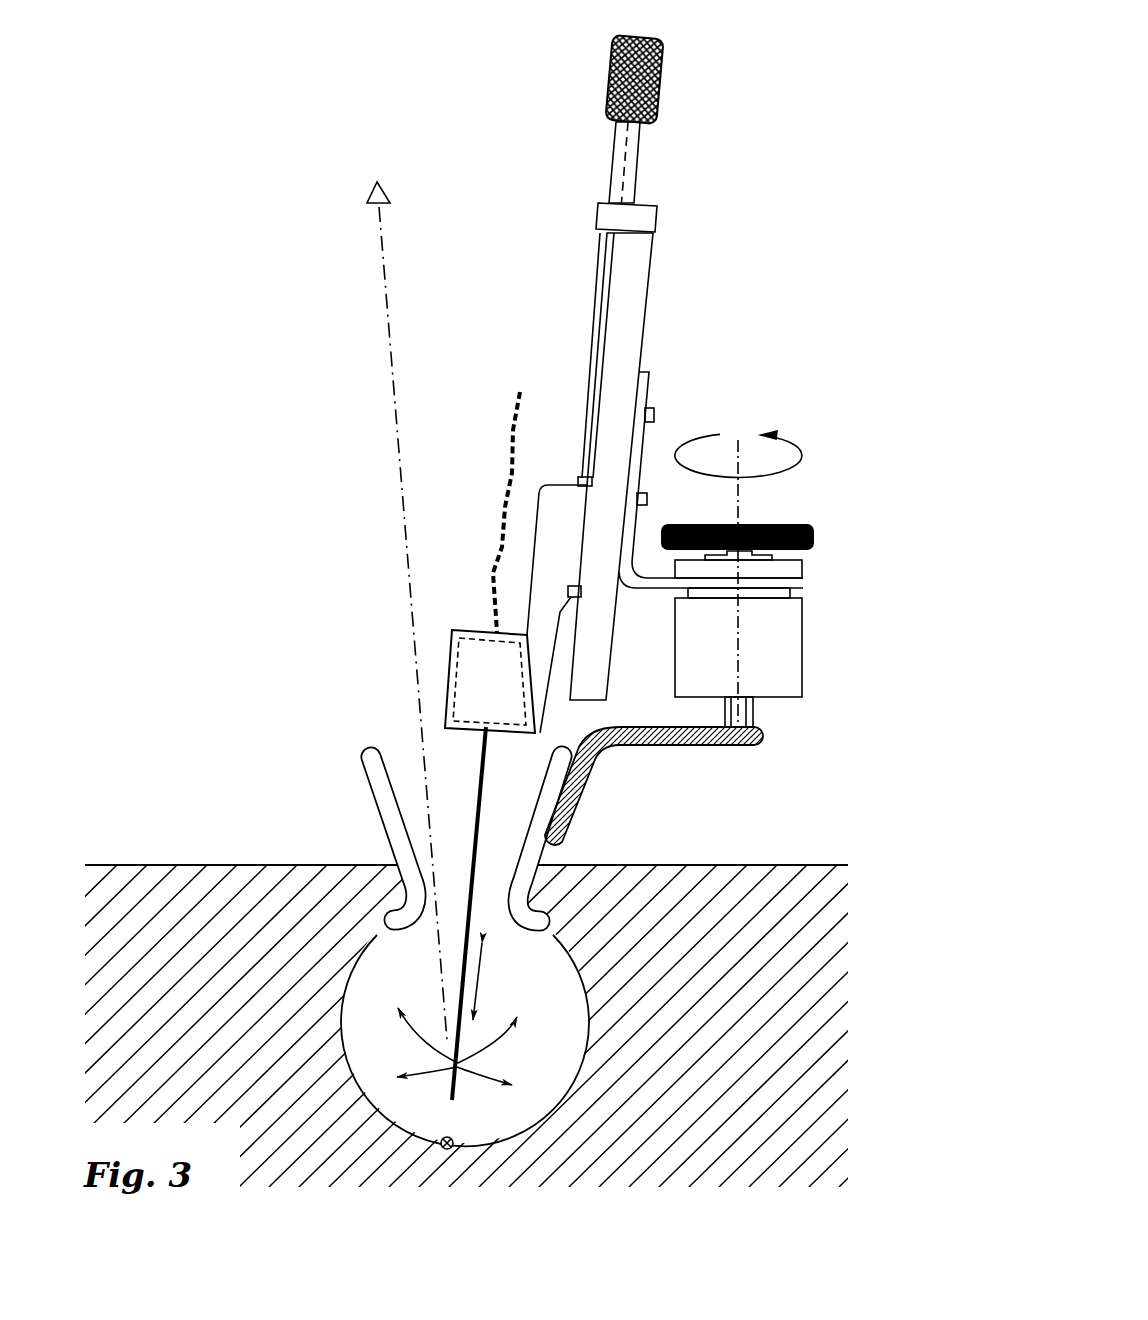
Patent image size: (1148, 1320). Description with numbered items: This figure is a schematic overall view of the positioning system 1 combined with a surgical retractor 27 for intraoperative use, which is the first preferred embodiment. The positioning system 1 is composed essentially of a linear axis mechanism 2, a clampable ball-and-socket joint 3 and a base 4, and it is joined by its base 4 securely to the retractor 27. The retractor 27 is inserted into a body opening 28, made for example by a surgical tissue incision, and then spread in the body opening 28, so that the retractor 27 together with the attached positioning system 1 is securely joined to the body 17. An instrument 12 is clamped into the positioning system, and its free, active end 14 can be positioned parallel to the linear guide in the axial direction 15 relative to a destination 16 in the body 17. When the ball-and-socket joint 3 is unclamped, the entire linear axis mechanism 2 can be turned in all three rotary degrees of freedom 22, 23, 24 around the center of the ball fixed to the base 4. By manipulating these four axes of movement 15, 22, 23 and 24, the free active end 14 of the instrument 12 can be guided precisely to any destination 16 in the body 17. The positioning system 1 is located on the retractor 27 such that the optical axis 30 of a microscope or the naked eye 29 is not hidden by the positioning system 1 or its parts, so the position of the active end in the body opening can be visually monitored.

The positioning system 1 is at (572, 568).
The linear axis mechanism 2 is at (673, 270).
The clampable ball-and-socket joint 3 is at (818, 635).
The base 4 is at (763, 737).
The instrument 12 is at (485, 678).
The free, active end 14 is at (468, 1102).
The axial direction 15 is at (493, 981).
The destination 16 is at (455, 1141).
The body 17 is at (813, 933).
The rotary degree of freedom 22 is at (435, 1074).
The rotary degree of freedom 23 is at (440, 1022).
The rotary degree of freedom 24 is at (738, 438).
The surgical retractor 27 is at (383, 800).
The body opening 28 is at (488, 864).
The naked eye 29 is at (366, 193).
The optical axis 30 is at (396, 421).